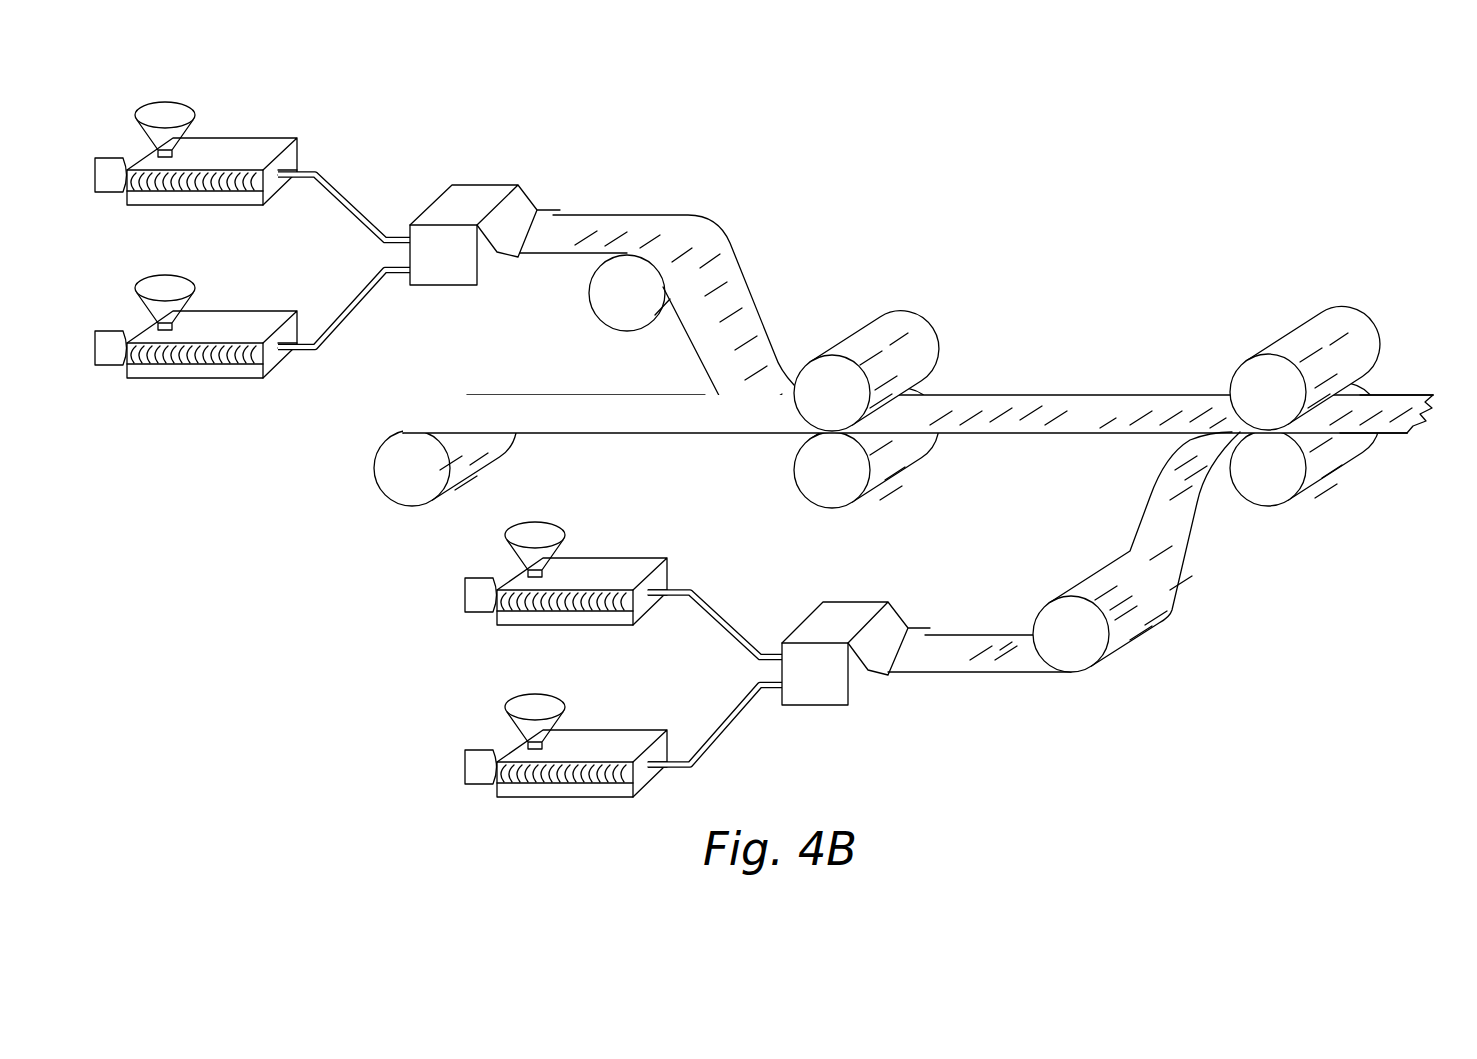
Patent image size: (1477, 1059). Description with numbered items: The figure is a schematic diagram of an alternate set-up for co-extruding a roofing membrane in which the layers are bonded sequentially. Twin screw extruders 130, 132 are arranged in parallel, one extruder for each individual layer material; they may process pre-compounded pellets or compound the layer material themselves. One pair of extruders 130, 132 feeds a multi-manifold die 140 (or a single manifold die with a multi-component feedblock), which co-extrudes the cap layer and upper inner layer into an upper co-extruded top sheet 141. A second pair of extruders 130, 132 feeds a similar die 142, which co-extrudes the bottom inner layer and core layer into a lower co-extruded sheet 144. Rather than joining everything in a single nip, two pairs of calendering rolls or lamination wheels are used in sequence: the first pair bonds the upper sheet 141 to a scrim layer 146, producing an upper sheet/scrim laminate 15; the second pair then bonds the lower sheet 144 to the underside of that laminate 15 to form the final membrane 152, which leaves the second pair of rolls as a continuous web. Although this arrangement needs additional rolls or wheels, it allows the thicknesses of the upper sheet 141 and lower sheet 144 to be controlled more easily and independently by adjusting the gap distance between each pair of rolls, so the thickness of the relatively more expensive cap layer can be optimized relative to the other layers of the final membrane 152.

The extruder 130 is at (267, 143).
The extruder 132 is at (248, 322).
The multi-manifold die 140 is at (468, 195).
The upper co-extruded top sheet 141 is at (620, 226).
The scrim layer 146 is at (573, 410).
The laminate 15 is at (1050, 434).
The final membrane 152 is at (1392, 408).
The die 142 is at (838, 608).
The lower co-extruded sheet 144 is at (958, 660).